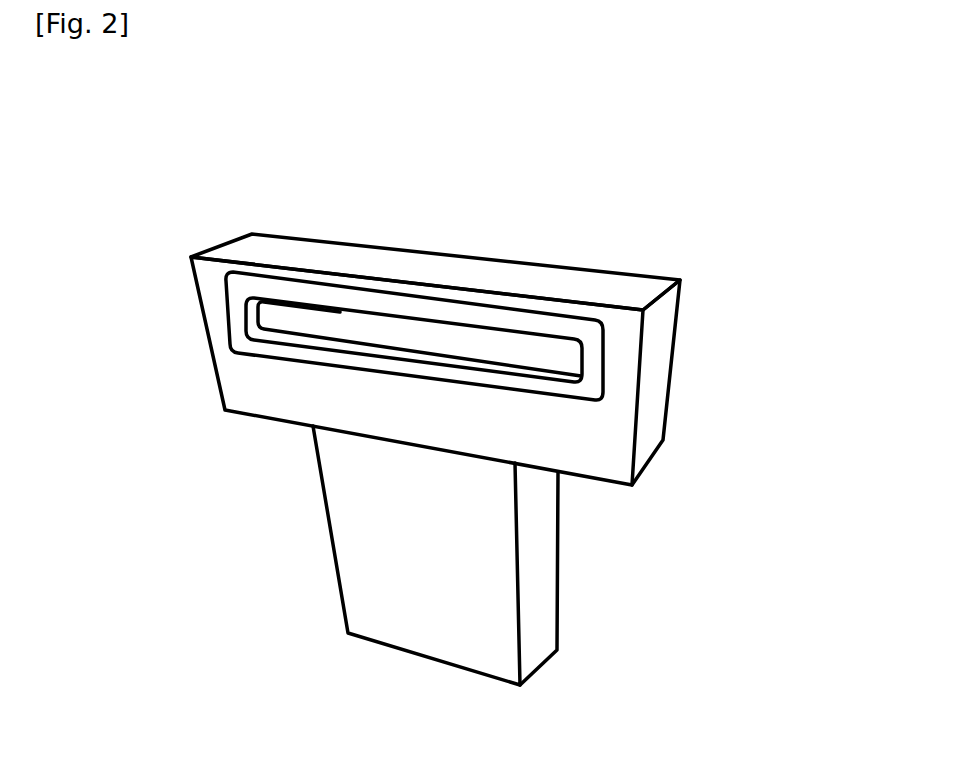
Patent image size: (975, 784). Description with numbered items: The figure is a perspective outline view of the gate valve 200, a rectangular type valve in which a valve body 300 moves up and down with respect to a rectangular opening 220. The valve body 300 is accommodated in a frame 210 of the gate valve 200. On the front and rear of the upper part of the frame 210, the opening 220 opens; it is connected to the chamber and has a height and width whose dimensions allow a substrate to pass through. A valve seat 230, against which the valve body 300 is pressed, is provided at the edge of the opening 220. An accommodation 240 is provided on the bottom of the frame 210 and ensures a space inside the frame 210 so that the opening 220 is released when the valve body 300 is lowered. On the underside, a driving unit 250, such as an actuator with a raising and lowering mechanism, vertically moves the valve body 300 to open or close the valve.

The gate valve 200 is at (718, 148).
The frame 210 is at (222, 242).
The opening 220 is at (381, 310).
The valve seat 230 is at (253, 333).
The accommodation 240 is at (278, 405).
The driving unit 250 is at (343, 523).
The valve body 300 is at (555, 361).